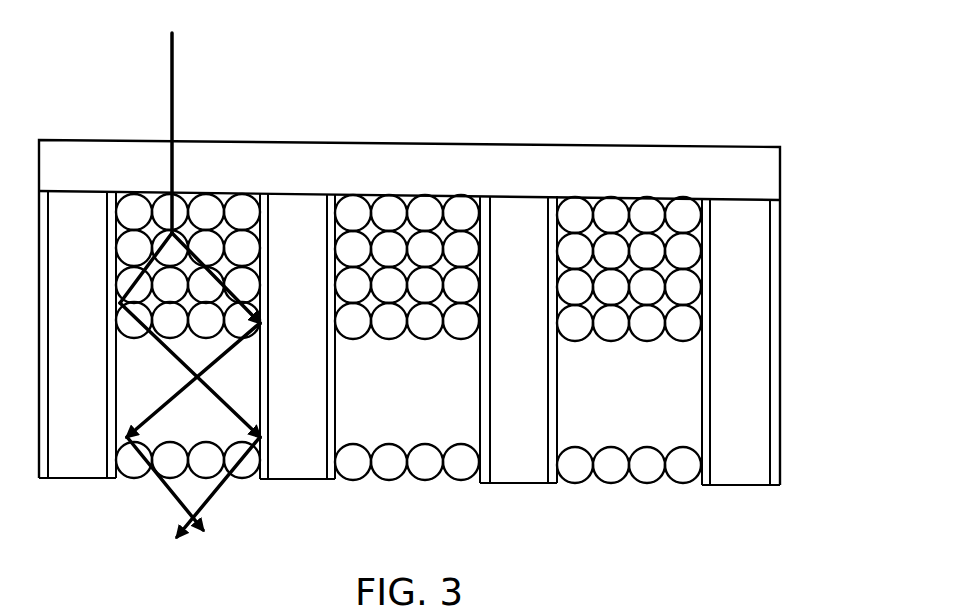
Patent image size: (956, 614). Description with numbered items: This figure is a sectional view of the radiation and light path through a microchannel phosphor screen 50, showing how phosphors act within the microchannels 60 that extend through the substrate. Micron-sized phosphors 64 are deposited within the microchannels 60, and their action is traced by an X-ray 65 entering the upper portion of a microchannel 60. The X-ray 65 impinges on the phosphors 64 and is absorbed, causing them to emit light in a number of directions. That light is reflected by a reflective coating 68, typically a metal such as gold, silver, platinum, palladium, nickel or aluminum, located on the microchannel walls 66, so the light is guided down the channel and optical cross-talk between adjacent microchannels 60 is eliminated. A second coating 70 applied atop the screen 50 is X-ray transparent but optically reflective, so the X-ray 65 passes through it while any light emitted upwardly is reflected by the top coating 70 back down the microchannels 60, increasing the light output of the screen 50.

The microchannel phosphor screen 50 is at (794, 352).
The microchannels 60 is at (673, 409).
The phosphors 64 is at (605, 467).
The X-ray 65 is at (190, 268).
The microchannel walls 66 is at (709, 327).
The reflective coating 68 is at (267, 480).
The second coating 70 is at (330, 163).